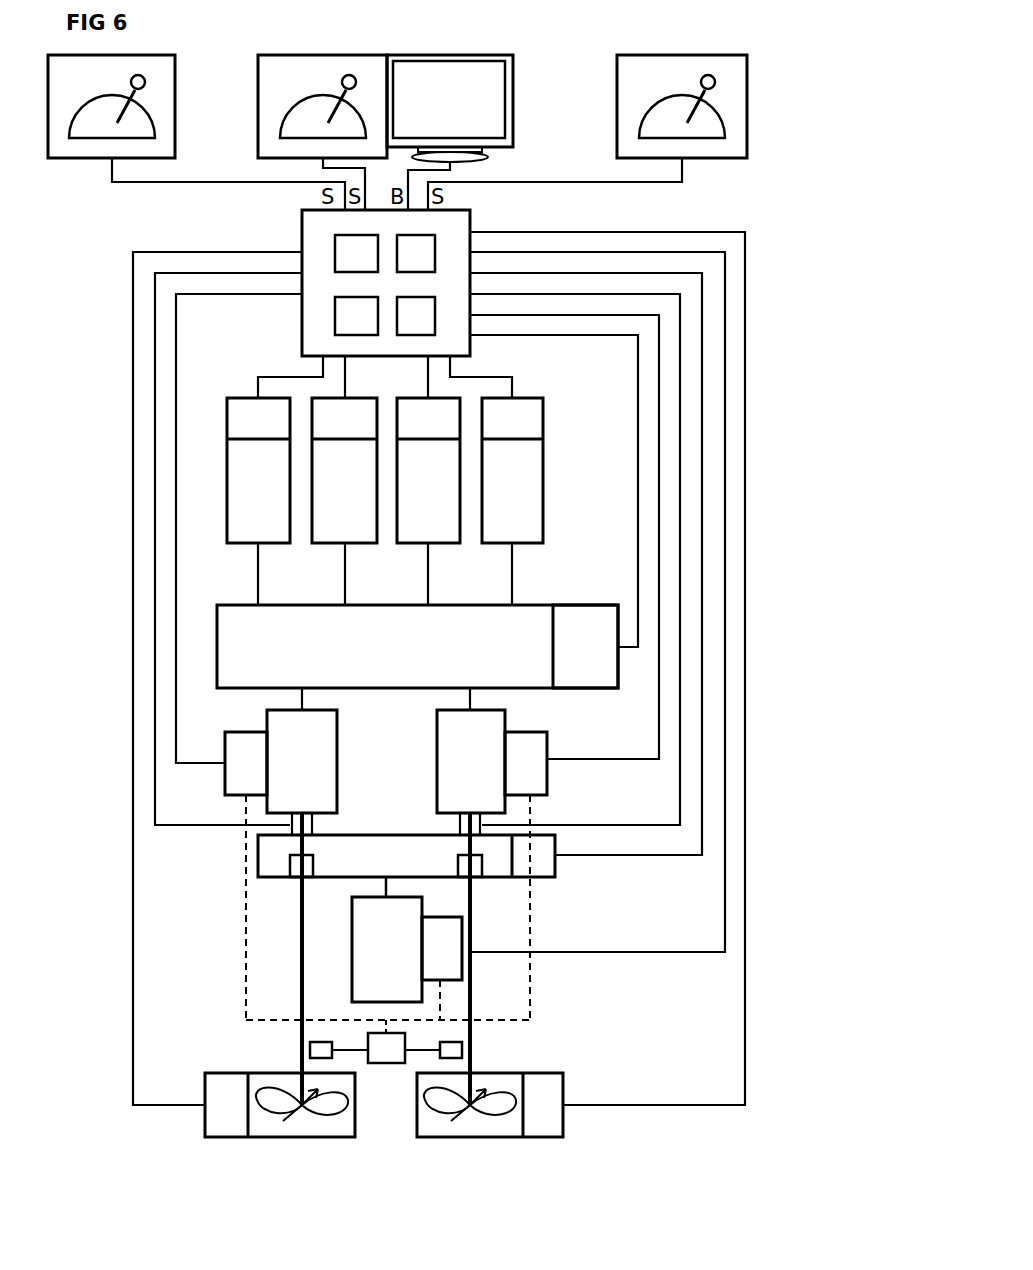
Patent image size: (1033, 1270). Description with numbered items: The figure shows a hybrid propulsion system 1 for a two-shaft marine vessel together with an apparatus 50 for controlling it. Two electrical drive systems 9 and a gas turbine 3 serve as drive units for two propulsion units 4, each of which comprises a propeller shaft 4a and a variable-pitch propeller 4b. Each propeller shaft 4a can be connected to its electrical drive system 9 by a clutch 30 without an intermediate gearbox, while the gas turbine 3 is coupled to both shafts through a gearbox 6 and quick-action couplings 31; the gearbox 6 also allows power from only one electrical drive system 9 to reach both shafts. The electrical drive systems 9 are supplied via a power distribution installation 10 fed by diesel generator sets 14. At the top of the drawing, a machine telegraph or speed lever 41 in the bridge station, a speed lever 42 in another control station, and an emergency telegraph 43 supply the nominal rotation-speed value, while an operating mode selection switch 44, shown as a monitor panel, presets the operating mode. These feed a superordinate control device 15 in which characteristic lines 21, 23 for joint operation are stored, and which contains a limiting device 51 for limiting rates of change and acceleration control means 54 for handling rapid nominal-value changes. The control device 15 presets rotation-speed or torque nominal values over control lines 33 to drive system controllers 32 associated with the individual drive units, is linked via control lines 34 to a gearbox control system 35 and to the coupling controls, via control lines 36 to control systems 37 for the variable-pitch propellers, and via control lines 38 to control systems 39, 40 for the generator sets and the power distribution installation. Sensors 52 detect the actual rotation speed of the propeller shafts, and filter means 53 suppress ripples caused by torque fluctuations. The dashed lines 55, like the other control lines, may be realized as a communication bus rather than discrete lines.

The hybrid propulsion system 1 is at (100, 1105).
The gas turbine 3 is at (352, 981).
The propulsion unit 4 is at (222, 1005).
The propeller shaft 4a is at (304, 948).
The variable-pitch propeller 4b is at (495, 1090).
The gearbox 6 is at (324, 880).
The electrical drive system 9 is at (338, 760).
The power distribution installation 10 is at (417, 626).
The diesel generator set 14 is at (412, 470).
The control device 15 is at (359, 283).
The characteristic line 21 is at (334, 259).
The characteristic line 23 is at (436, 268).
The clutch 30 is at (314, 827).
The quick-action coupling 31 is at (292, 879).
The drive system controller 32 is at (224, 783).
The control line 33 is at (177, 573).
The control line 34 is at (183, 827).
The gearbox control system 35 is at (556, 870).
The control line 36 is at (133, 958).
The control system for variable-pitch propeller 37 is at (205, 1125).
The control line 38 is at (504, 376).
The control system for power generator sets 39 is at (544, 421).
The control system for power distribution installation 40 is at (592, 599).
The display instrument 41 is at (258, 128).
The speed lever 42 is at (176, 85).
The emergency telegraph 43 is at (616, 128).
The operating mode selection switch 44 is at (514, 85).
The apparatus 50 is at (120, 241).
The limiting device 51 is at (334, 321).
The sensor 52 is at (310, 1049).
The filter means 53 is at (388, 1065).
The acceleration control means 54 is at (436, 320).
The line 55 is at (246, 930).